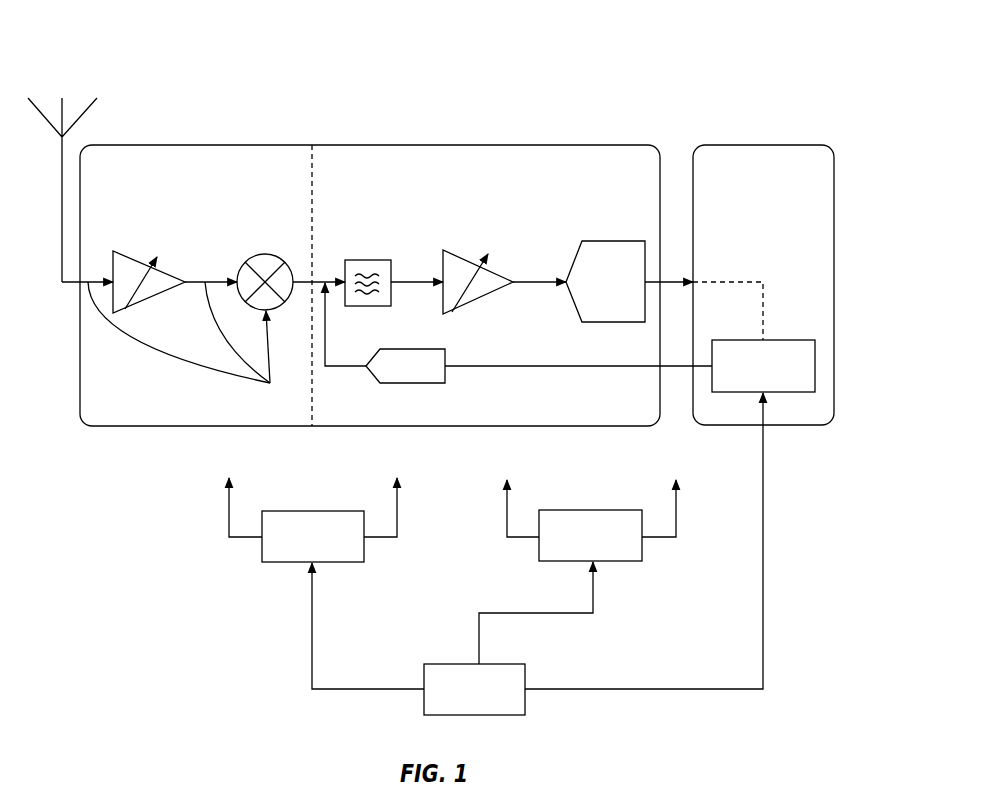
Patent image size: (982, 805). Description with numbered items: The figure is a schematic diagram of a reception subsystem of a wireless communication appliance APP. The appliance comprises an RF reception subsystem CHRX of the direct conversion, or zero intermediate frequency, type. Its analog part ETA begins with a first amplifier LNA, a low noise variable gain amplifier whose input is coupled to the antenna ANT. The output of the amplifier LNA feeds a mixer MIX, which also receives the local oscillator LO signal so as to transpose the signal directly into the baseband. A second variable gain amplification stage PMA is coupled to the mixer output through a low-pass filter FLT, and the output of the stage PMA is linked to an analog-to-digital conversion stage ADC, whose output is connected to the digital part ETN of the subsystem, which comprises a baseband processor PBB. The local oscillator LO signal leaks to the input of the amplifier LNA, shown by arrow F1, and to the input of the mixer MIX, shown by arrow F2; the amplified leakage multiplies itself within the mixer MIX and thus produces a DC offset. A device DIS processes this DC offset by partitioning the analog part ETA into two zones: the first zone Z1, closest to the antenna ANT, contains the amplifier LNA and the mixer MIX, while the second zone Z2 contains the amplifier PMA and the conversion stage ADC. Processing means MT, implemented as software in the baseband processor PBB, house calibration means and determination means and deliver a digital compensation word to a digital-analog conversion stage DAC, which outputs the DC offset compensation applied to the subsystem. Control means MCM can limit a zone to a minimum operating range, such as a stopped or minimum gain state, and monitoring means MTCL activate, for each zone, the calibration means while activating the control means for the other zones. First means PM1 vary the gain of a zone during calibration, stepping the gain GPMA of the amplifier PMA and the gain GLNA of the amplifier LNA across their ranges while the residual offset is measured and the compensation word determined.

The antenna ANT is at (65, 107).
The analog part ETA is at (344, 118).
The RF reception subsystem CHRX is at (641, 117).
The digital part ETN is at (750, 117).
The first zone Z1 is at (202, 167).
The second zone Z2 is at (485, 165).
The first amplifier LNA is at (149, 269).
The mixer MIX is at (265, 267).
The low-pass filter FLT is at (368, 265).
The second variable gain amplification stage PMA is at (478, 269).
The analog-to-digital conversion stage ADC is at (605, 281).
The digital-analog conversion stage DAC is at (385, 333).
The arrow indicating local oscillator leakage to the LNA input F1 is at (132, 338).
The arrow indicating local oscillator leakage to the mixer input F2 is at (223, 330).
The local oscillator LO is at (275, 363).
The processing means MT is at (792, 340).
The baseband processor PBB is at (794, 427).
The control means MCM is at (313, 520).
The first means PM1 is at (591, 520).
The gain of the amplifier PMA GPMA is at (515, 460).
The gain of the amplifier LNA GLNA is at (681, 460).
The monitoring means MTCL is at (537, 554).
The wireless communication appliance APP is at (135, 505).
The device for processing the DC offset DIS is at (798, 592).